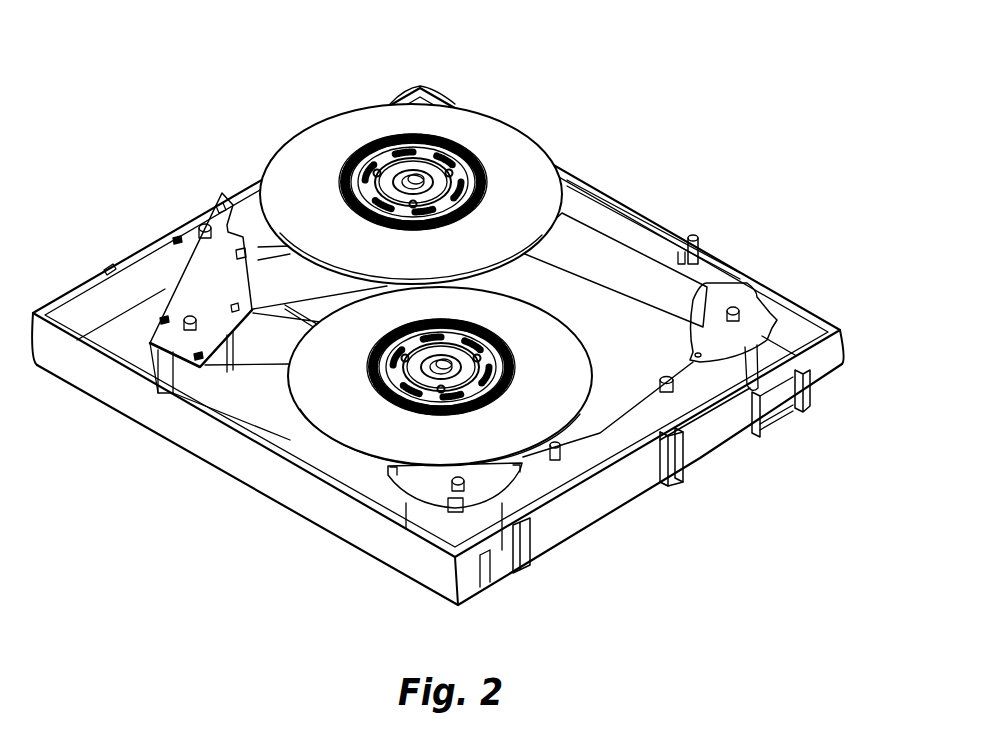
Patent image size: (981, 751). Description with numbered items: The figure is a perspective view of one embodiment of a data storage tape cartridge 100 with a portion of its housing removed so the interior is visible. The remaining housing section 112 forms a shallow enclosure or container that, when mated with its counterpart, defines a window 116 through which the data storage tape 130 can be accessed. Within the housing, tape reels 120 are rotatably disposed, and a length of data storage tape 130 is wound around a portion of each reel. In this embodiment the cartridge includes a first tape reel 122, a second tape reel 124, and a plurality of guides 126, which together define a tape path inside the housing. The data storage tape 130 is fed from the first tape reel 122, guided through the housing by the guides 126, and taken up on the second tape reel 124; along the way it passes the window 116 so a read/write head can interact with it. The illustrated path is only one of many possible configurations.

The data storage tape cartridge 100 is at (632, 68).
The housing section 112 is at (117, 400).
The window 116 is at (632, 487).
The tape reel 120 is at (368, 307).
The first tape reel 122 is at (340, 128).
The second tape reel 124 is at (318, 390).
The guides 126 is at (170, 282).
The data storage tape 130 is at (645, 268).